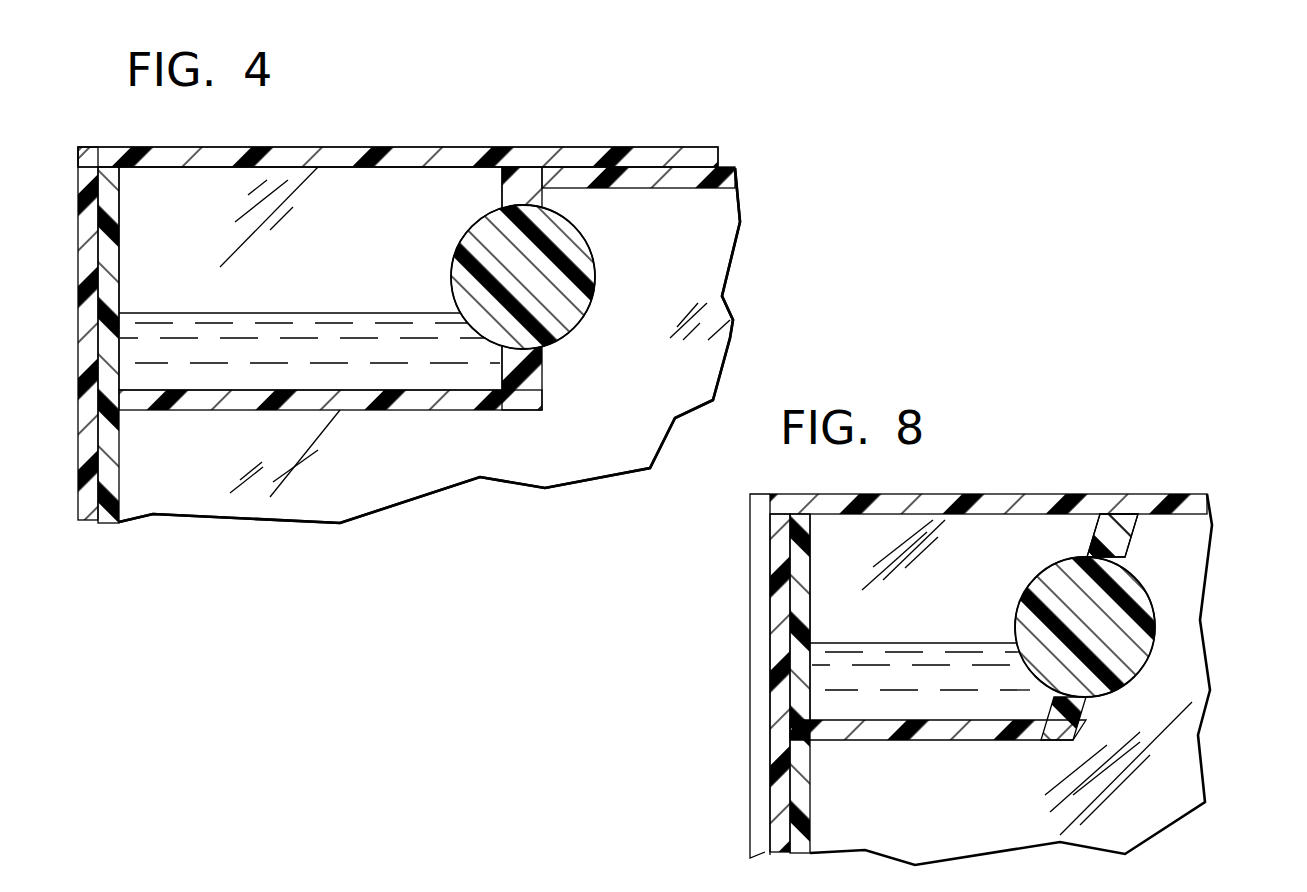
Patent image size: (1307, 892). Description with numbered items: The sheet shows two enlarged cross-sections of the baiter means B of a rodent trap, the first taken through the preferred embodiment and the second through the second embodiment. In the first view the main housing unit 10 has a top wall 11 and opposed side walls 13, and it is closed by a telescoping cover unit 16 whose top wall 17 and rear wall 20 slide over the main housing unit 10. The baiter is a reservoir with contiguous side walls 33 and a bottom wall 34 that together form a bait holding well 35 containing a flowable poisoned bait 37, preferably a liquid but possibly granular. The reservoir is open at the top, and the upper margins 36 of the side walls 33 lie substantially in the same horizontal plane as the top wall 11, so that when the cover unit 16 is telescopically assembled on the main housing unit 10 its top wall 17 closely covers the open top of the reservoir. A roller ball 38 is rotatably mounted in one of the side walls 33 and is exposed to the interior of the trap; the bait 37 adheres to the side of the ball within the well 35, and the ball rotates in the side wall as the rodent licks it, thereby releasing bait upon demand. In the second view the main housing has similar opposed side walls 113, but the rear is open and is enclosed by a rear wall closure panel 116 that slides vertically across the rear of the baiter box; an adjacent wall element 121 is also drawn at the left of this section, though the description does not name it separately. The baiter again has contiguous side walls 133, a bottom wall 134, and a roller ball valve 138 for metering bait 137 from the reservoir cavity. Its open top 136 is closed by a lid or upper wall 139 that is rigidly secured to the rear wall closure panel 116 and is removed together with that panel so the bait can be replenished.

In FIG. 4, the main housing unit 10 is at (734, 297).
In FIG. 4, the top wall 11 is at (697, 180).
In FIG. 4, the side walls 13 is at (593, 455).
In FIG. 4, the cover unit 16 is at (524, 97).
In FIG. 4, the top wall 17 is at (398, 147).
In FIG. 4, the rear wall 20 is at (100, 350).
In FIG. 4, the side walls 33 is at (540, 204).
In FIG. 4, the bottom wall 34 is at (190, 400).
In FIG. 4, the bait holding well 35 is at (342, 222).
In FIG. 4, the upper margins 36 is at (513, 167).
In FIG. 4, the poisoned bait 37 is at (402, 352).
In FIG. 4, the roller ball 38 is at (583, 300).
In FIG. 8, the side walls 113 is at (1180, 796).
In FIG. 8, the rear wall closure panel 116 is at (770, 668).
In FIG. 8, the side wall 121 is at (770, 835).
In FIG. 8, the side walls 133 is at (1120, 548).
In FIG. 8, the bottom wall 134 is at (935, 728).
In FIG. 8, the open top 136 is at (1100, 512).
In FIG. 8, the bait 137 is at (832, 680).
In FIG. 8, the roller ball valve 138 is at (1145, 640).
In FIG. 8, the upper wall 139 is at (990, 494).